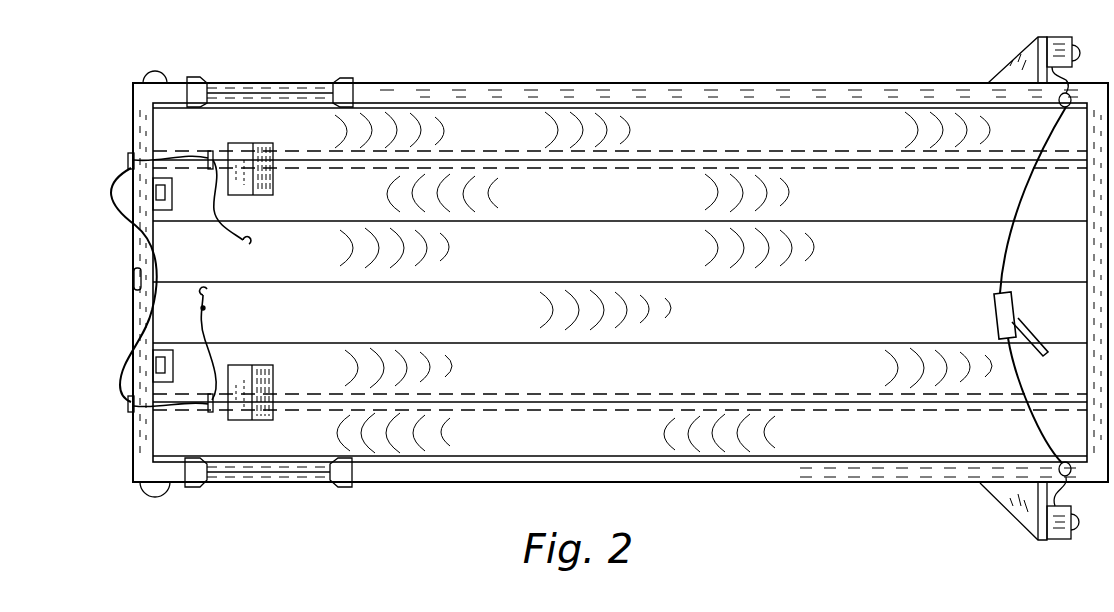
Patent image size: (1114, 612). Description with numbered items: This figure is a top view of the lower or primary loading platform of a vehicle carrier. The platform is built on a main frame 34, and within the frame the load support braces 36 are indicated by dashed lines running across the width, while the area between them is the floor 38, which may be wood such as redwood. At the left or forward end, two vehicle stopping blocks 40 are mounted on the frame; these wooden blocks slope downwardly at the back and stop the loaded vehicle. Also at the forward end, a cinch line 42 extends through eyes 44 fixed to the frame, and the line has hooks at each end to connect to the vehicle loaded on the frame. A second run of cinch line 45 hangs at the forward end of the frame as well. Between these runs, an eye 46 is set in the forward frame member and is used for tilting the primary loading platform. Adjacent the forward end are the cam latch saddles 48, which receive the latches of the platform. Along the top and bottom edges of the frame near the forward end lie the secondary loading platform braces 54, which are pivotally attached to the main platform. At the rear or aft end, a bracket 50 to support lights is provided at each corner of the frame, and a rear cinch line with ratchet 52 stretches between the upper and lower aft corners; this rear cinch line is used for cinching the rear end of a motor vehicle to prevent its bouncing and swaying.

The main frame 34 is at (507, 484).
The load support braces 36 is at (590, 408).
The floor 38 is at (717, 446).
The vehicle stopping blocks 40 is at (275, 178).
The cinch line 42 is at (118, 200).
The eyes 44 is at (128, 157).
The elastic cord 45 is at (140, 326).
The eye 46 is at (132, 280).
The cam latch saddles 48 is at (170, 196).
The bracket 50 is at (1010, 518).
The rear cinch line with ratchet 52 is at (1003, 263).
The secondary loading platform brace 54 is at (303, 473).